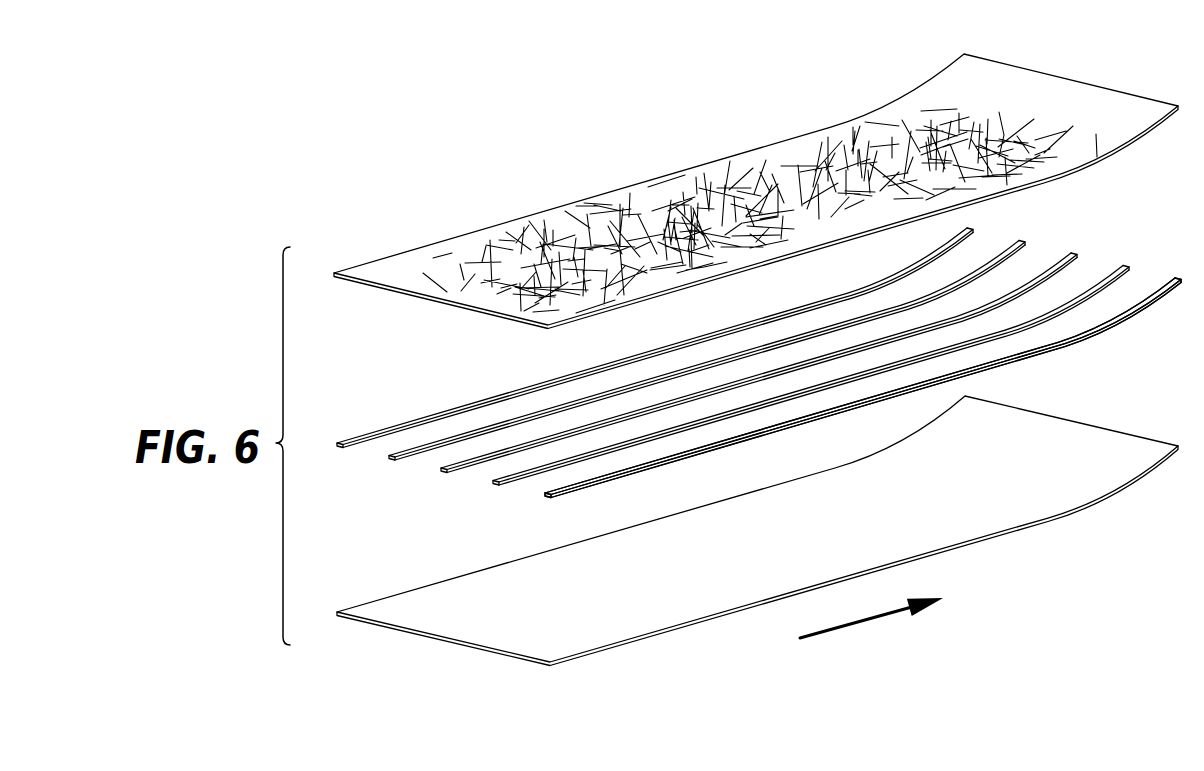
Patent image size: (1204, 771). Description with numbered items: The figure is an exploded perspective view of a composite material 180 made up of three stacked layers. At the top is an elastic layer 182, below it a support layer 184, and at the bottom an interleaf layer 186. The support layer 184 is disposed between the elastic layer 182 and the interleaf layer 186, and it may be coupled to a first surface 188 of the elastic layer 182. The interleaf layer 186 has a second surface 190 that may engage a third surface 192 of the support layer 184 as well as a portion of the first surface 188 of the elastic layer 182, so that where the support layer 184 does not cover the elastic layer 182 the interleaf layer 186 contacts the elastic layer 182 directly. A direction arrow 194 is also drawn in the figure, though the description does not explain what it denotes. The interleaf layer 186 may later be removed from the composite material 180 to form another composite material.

The composite material 180 is at (387, 170).
The elastic layer 182 is at (1010, 95).
The support layer 184 is at (1062, 258).
The interleaf layer 186 is at (1083, 455).
The first surface 188 is at (1131, 148).
The second surface 190 is at (746, 563).
The third surface 192 is at (1102, 335).
The direction arrow 194 is at (857, 623).